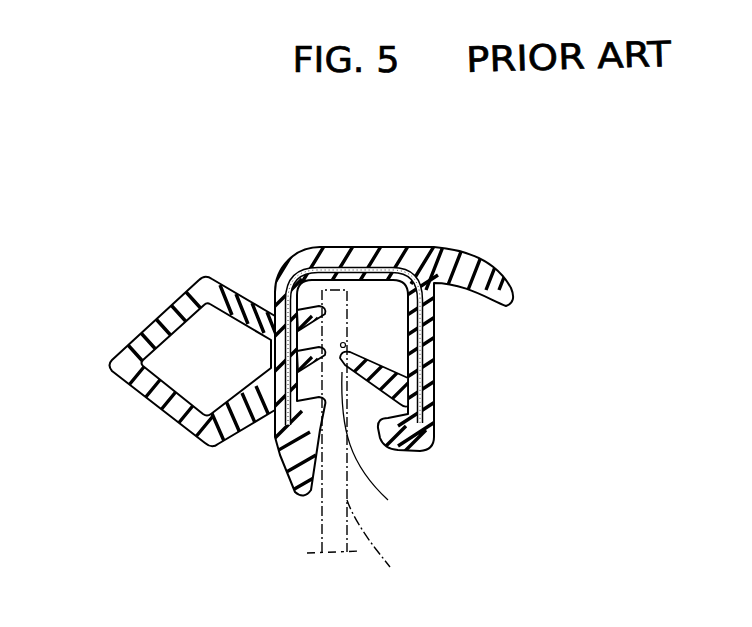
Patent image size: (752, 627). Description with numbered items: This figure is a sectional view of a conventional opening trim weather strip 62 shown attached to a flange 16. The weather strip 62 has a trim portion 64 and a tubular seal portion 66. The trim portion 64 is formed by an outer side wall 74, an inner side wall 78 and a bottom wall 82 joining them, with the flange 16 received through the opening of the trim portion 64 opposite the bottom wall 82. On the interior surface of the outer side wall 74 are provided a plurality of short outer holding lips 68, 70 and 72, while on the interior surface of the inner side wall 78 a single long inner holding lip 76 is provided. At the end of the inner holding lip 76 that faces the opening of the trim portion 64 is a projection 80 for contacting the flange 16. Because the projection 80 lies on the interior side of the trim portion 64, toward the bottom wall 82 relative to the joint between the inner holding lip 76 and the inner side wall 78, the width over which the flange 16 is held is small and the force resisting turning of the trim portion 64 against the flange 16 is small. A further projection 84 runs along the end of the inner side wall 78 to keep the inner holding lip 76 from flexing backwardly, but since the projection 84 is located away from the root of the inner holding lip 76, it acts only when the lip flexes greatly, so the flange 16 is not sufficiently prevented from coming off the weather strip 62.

The flange 16 is at (357, 448).
The opening trim weather strip 62 is at (321, 380).
The trim portion 64 is at (390, 250).
The tubular seal portion 66 is at (134, 337).
The outer holding lip 68 is at (300, 493).
The outer holding lip 70 is at (276, 443).
The outer holding lip 72 is at (316, 308).
The outer side wall 74 is at (272, 412).
The inner holding lip 76 is at (377, 366).
The inner side wall 78 is at (436, 336).
The projection 80 is at (388, 500).
The bottom wall 82 is at (347, 257).
The projection 84 is at (380, 428).